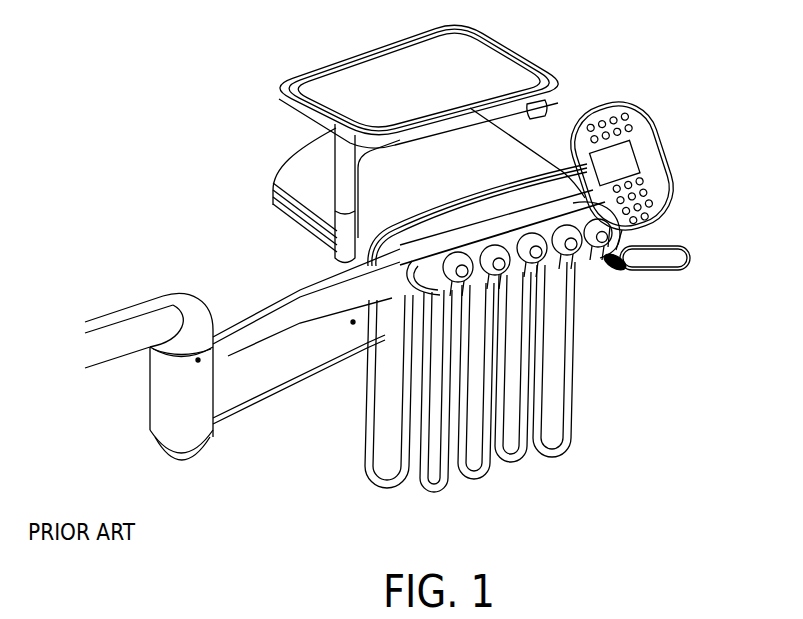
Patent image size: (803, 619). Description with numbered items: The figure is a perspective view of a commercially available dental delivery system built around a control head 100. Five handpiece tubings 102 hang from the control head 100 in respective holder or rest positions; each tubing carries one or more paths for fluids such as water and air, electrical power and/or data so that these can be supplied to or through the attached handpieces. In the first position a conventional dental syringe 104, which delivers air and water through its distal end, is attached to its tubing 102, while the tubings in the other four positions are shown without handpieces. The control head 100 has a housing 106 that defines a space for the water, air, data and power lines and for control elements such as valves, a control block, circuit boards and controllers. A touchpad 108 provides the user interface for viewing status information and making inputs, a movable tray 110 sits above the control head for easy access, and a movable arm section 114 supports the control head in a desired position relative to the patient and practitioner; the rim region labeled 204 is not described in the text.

The control head 100 is at (626, 291).
The handpiece tubing 102 is at (395, 489).
The dental syringe 104 is at (445, 252).
The housing 106 is at (305, 170).
The touchpad 108 is at (647, 140).
The movable tray 110 is at (473, 73).
The movable arm section 114 is at (130, 330).
The console rim 204 is at (511, 229).